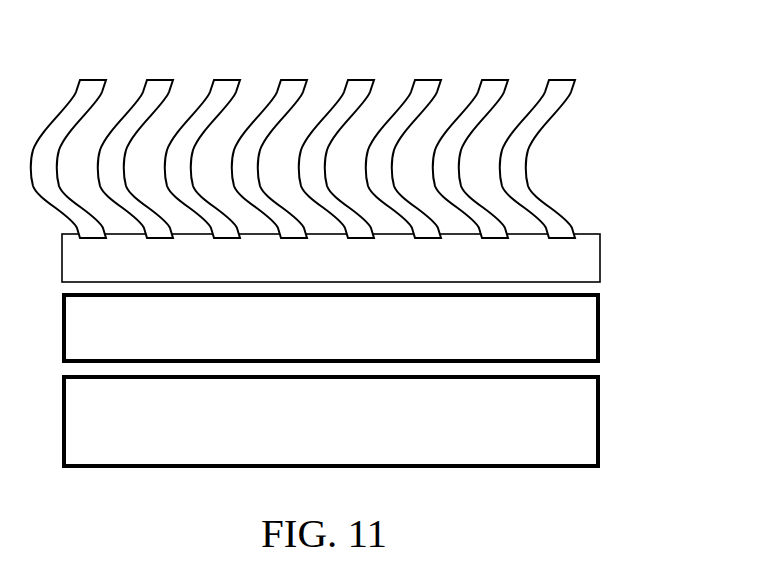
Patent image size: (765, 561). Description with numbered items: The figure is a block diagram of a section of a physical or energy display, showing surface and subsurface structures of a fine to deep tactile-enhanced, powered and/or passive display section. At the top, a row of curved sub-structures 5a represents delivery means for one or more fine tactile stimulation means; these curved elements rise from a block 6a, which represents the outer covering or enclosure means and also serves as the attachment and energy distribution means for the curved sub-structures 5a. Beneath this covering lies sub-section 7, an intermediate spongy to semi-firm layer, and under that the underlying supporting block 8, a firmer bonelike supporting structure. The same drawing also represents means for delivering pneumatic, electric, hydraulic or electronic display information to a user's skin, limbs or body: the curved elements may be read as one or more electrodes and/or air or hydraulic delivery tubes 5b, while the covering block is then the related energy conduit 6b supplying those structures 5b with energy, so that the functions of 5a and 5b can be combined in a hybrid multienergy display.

The curved sub-structures 5a is at (334, 159).
The electrodes and/or air or hydraulic delivery tubes 5b is at (527, 174).
The outer covering or enclosure means 6a is at (390, 258).
The energy conduit 6b is at (600, 267).
The intermediate spongy to semi-firm layer 7 is at (600, 342).
The underlying supporting block 8 is at (600, 443).